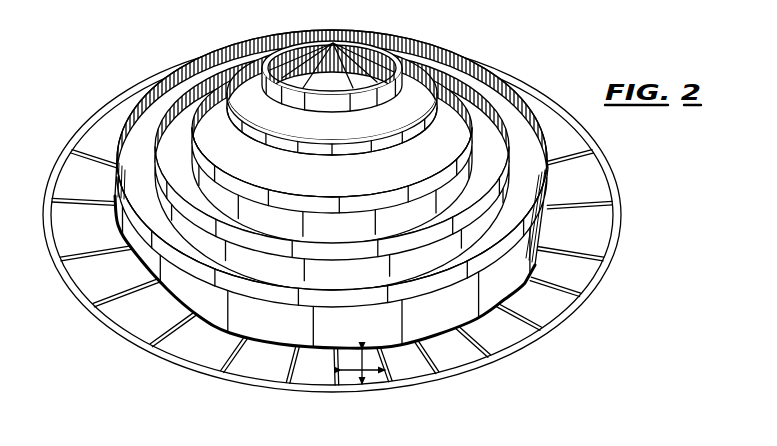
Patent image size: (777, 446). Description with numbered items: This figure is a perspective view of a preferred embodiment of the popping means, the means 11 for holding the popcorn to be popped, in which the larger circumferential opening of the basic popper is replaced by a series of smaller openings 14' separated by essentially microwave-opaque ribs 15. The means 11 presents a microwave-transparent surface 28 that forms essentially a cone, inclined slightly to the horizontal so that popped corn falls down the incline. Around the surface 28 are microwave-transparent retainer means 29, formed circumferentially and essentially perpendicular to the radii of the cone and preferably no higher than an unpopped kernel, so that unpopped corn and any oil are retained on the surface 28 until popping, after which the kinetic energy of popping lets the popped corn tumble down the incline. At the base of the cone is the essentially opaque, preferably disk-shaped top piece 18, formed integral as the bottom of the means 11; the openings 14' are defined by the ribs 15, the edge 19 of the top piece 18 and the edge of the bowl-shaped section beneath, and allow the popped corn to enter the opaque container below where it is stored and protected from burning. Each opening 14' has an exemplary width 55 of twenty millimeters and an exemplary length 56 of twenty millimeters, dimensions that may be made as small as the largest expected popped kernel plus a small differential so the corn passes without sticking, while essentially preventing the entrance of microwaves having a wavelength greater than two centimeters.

The means for holding the popcorn to be popped 11 is at (206, 40).
The smaller openings 14' is at (349, 285).
The ribs 15 is at (100, 305).
The top piece 18 is at (212, 333).
The edge of the top piece 19 is at (545, 338).
The microwave transparent surface 28 is at (325, 184).
The retainer means 29 is at (312, 31).
The width 55 is at (380, 376).
The length 56 is at (360, 386).